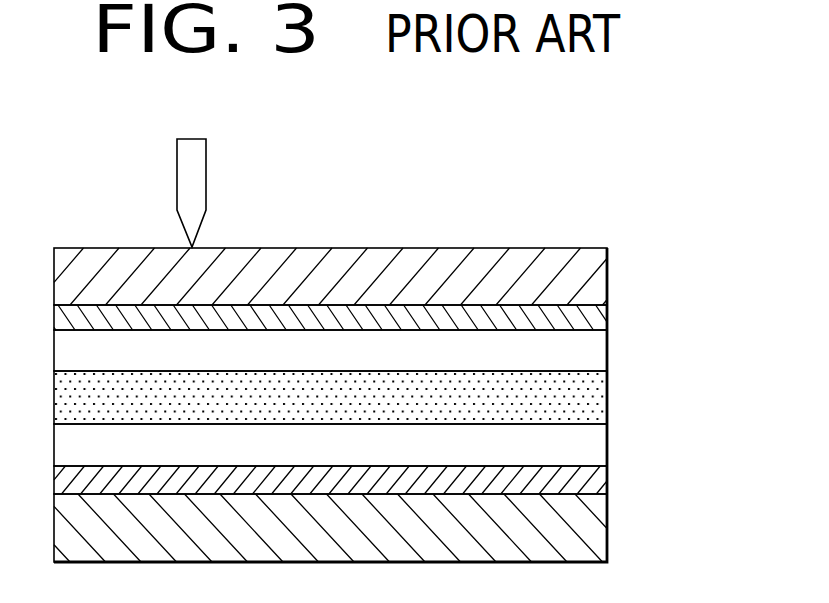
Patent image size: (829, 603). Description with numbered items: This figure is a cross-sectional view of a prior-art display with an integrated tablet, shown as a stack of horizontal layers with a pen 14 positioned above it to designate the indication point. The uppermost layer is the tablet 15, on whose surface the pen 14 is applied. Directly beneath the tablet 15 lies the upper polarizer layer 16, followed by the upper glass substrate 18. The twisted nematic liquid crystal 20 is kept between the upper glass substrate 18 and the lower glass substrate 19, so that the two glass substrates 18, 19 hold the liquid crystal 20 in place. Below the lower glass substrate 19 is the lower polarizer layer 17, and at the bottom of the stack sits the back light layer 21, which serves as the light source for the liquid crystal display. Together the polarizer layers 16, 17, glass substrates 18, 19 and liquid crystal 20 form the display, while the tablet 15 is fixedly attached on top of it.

The pen 14 is at (206, 180).
The tablet 15 is at (603, 283).
The polarizer layer 16 is at (603, 320).
The polarizer layer 17 is at (598, 487).
The glass substrate 18 is at (598, 357).
The glass substrate 19 is at (598, 445).
The twisted nematic liquid crystal 20 is at (597, 402).
The back light layer 21 is at (598, 538).